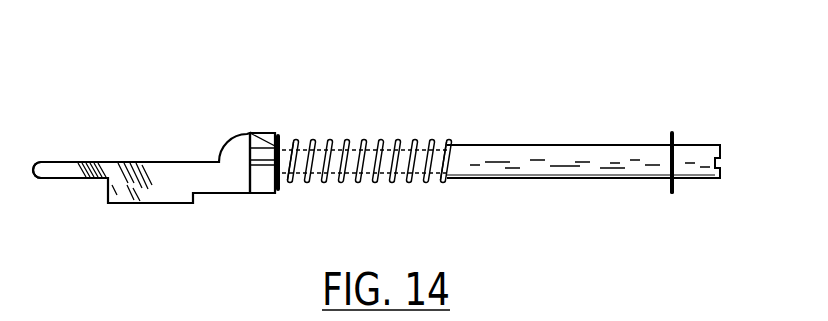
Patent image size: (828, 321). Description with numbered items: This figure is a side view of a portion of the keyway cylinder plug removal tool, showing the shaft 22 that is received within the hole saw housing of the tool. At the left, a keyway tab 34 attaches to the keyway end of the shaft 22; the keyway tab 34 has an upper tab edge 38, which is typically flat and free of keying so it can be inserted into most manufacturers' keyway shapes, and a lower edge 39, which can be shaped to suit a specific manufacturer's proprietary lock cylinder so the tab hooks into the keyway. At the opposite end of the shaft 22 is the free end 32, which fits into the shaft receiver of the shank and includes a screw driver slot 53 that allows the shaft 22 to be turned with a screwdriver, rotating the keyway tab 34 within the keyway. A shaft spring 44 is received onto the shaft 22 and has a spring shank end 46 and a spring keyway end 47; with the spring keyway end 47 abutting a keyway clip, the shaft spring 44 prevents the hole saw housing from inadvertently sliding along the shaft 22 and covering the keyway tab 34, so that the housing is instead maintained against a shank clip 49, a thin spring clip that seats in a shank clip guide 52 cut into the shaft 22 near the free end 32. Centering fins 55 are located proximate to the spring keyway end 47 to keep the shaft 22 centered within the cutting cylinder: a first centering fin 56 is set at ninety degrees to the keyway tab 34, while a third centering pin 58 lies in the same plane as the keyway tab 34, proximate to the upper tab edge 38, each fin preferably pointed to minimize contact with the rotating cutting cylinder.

The shaft 22 is at (500, 150).
The free end 32 is at (717, 180).
The keyway tab 34 is at (157, 176).
The upper tab edge 38 is at (90, 160).
The lower edge 39 is at (132, 205).
The shaft spring 44 is at (360, 152).
The spring shank end 46 is at (447, 187).
The spring keyway end 47 is at (296, 138).
The shank clip 49 is at (676, 140).
The shank clip guide 52 is at (669, 168).
The screw driver slot 53 is at (722, 150).
The centering fins 55 is at (216, 116).
The first centering fin 56 is at (253, 167).
The third centering pin 58 is at (262, 134).